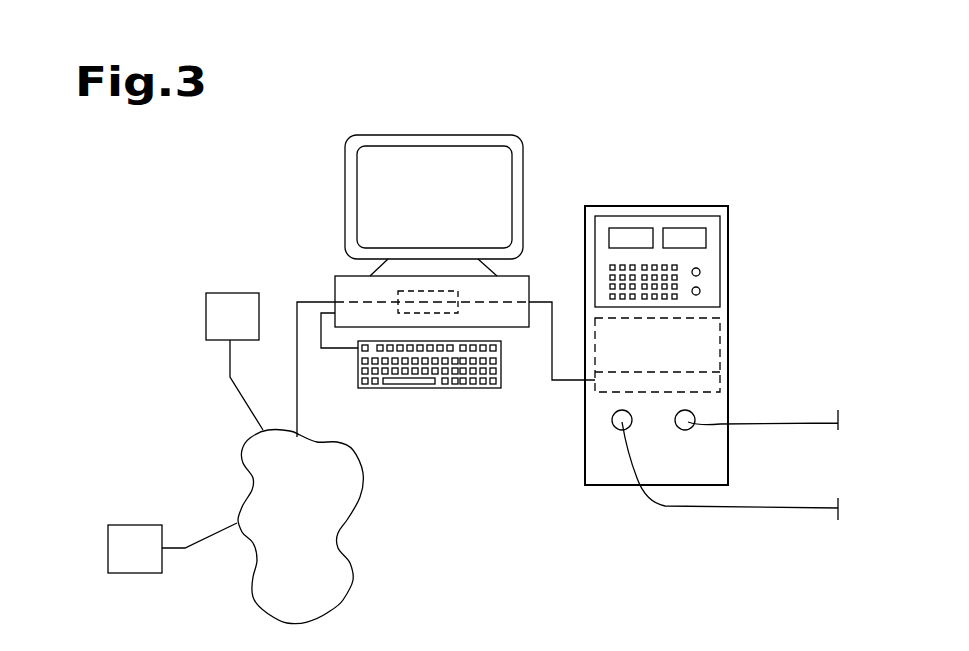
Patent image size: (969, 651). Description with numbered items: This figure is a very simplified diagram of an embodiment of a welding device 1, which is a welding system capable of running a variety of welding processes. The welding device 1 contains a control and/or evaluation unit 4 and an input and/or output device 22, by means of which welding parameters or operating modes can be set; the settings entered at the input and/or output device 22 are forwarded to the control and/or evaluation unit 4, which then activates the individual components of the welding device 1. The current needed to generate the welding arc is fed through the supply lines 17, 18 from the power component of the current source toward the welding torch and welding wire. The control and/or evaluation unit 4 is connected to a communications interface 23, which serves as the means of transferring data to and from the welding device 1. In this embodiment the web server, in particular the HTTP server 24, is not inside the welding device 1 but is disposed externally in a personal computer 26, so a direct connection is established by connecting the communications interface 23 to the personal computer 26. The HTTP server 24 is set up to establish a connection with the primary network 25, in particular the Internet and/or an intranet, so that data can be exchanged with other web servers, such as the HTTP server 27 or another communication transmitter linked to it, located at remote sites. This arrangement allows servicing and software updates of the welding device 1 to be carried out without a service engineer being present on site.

The welding device 1 is at (748, 157).
The control and/or evaluation unit 4 is at (688, 348).
The supply line 17 is at (753, 415).
The supply line 18 is at (772, 508).
The input and/or output device 22 is at (703, 257).
The communications interface 23 is at (688, 385).
The HTTP server 24 is at (413, 305).
The primary network 25 is at (313, 555).
The personal computer 26 is at (553, 132).
The HTTP server 27 is at (233, 317).